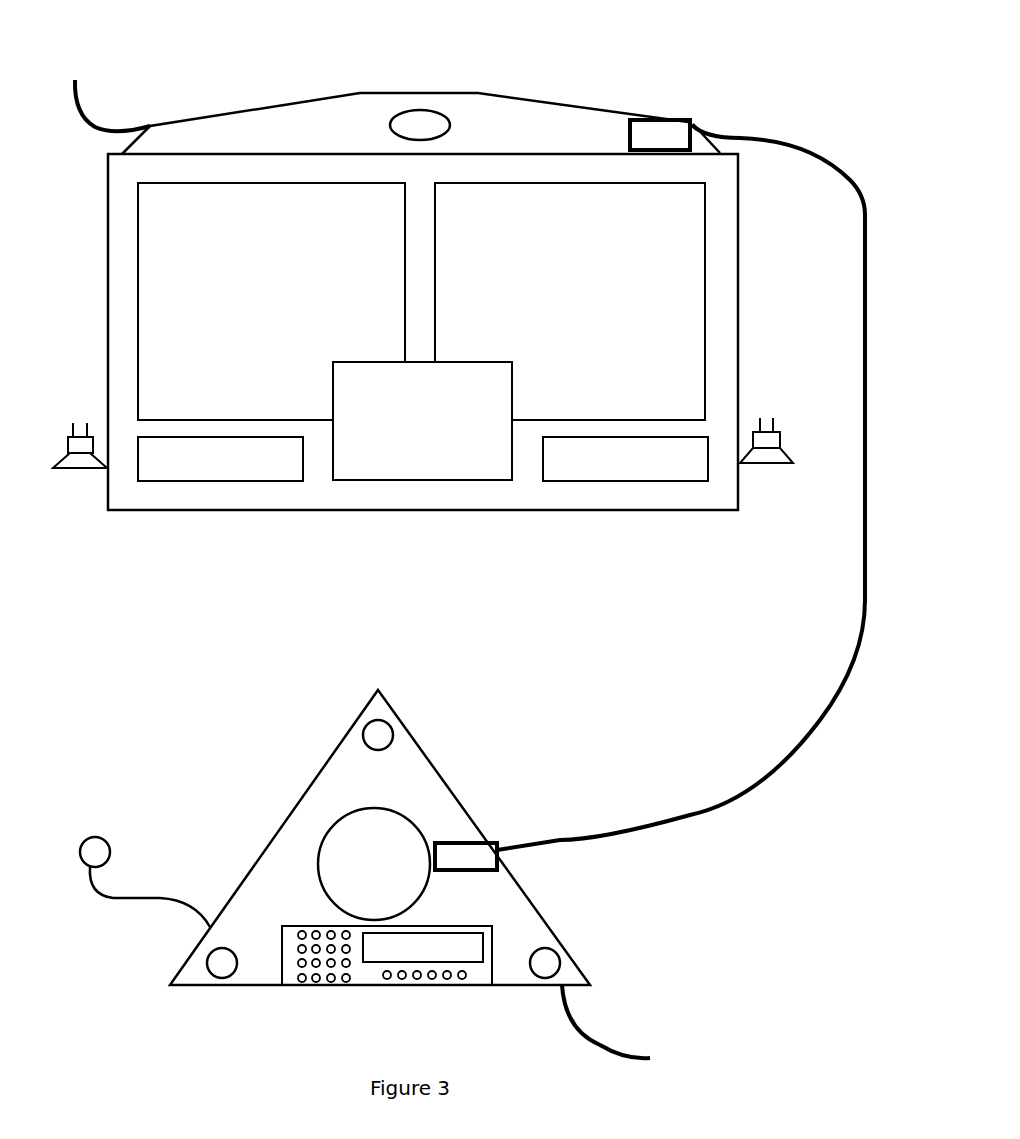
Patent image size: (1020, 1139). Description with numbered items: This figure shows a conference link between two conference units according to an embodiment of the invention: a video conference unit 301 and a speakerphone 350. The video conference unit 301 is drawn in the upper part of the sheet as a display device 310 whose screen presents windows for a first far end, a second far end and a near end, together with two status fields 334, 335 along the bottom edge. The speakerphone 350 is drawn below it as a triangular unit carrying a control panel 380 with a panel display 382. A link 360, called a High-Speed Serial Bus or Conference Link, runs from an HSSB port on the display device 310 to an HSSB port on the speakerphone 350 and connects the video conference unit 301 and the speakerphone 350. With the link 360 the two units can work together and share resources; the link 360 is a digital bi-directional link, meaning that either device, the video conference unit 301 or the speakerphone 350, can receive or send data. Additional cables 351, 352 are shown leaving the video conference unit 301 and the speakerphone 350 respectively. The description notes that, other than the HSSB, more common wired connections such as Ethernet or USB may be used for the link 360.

The video conference unit 301 is at (310, 62).
The display device 310 is at (545, 103).
The first status indicator 334 is at (240, 482).
The second status indicator 335 is at (643, 481).
The speakerphone 350 is at (282, 827).
The display cable 351 is at (78, 96).
The conferencing unit cable 352 is at (590, 1037).
The link 360 is at (695, 797).
The control panel 380 is at (407, 926).
The panel display 382 is at (452, 933).